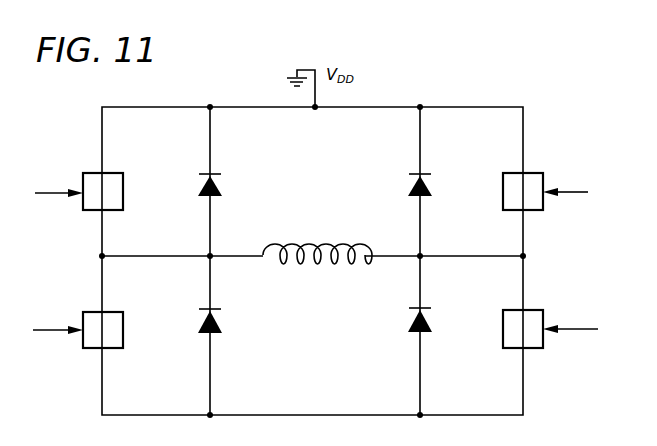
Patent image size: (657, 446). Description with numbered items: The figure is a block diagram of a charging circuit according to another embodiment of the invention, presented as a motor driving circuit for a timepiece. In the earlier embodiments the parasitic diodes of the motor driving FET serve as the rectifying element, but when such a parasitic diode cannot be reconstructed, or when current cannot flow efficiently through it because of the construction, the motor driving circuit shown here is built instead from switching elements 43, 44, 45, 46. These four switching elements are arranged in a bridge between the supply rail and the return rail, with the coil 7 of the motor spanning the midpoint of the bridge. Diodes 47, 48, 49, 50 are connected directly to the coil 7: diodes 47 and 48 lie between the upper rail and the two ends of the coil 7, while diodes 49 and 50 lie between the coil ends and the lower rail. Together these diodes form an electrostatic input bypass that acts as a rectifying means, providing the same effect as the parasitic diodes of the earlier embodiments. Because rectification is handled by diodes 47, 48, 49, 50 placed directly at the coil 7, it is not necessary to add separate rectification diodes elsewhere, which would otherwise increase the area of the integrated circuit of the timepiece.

The coil 7 is at (316, 243).
The switching element 43 is at (104, 173).
The switching element 44 is at (526, 173).
The switching element 45 is at (104, 312).
The switching element 46 is at (533, 310).
The diode 47 is at (222, 184).
The diode 48 is at (432, 186).
The diode 49 is at (222, 320).
The diode 50 is at (432, 318).